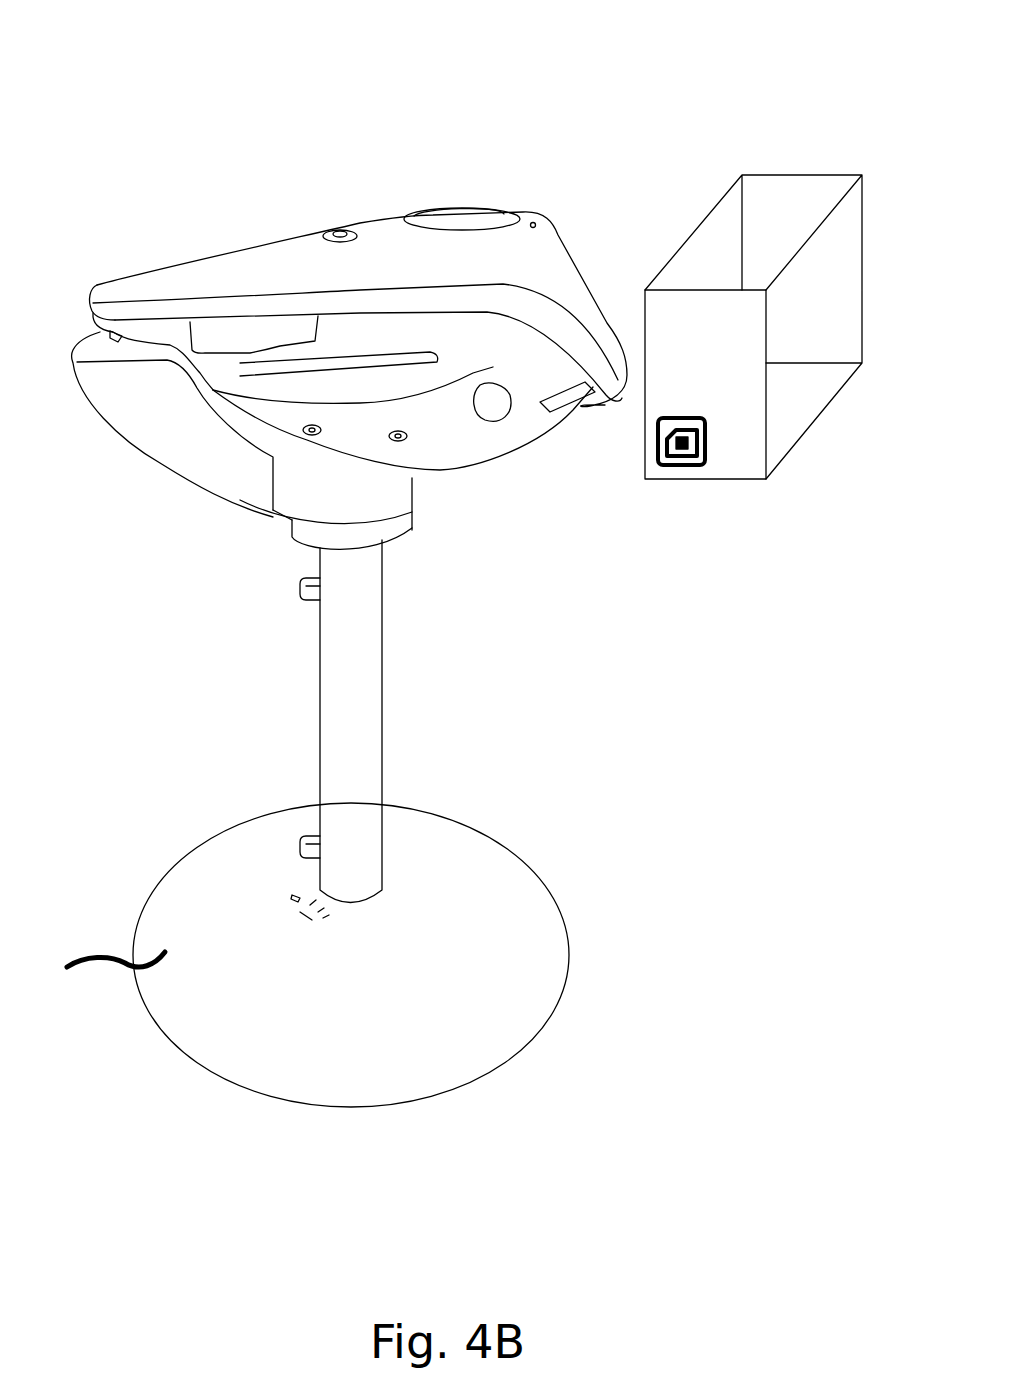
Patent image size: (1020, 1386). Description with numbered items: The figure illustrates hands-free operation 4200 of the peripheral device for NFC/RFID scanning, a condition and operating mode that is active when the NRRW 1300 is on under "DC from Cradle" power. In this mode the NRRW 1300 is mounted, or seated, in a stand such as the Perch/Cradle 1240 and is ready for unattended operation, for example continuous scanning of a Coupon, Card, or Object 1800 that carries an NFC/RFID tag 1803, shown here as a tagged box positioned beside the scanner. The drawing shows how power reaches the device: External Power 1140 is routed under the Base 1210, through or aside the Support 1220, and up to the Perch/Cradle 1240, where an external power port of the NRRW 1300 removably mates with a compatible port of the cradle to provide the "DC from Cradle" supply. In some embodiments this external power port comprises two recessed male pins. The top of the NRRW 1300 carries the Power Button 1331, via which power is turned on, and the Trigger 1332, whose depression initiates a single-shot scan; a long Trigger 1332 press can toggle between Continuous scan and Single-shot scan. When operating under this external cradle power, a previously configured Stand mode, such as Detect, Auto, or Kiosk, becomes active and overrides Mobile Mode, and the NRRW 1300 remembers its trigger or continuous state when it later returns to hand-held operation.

The hands-free operation 4200 is at (722, 80).
The NRRW 1300 is at (187, 257).
The Power Button 1331 is at (335, 228).
The Trigger 1332 is at (472, 203).
The Perch/Cradle 1240 is at (153, 450).
The Support 1220 is at (320, 757).
The Base 1210 is at (232, 790).
The External Power 1140 is at (90, 963).
The Coupon, Card, or Object 1800 is at (745, 481).
The NFC/RFID tag 1803 is at (665, 471).